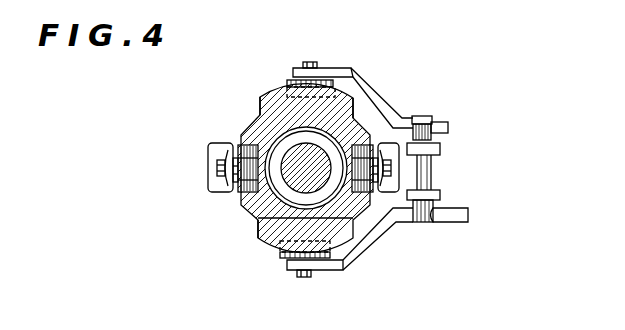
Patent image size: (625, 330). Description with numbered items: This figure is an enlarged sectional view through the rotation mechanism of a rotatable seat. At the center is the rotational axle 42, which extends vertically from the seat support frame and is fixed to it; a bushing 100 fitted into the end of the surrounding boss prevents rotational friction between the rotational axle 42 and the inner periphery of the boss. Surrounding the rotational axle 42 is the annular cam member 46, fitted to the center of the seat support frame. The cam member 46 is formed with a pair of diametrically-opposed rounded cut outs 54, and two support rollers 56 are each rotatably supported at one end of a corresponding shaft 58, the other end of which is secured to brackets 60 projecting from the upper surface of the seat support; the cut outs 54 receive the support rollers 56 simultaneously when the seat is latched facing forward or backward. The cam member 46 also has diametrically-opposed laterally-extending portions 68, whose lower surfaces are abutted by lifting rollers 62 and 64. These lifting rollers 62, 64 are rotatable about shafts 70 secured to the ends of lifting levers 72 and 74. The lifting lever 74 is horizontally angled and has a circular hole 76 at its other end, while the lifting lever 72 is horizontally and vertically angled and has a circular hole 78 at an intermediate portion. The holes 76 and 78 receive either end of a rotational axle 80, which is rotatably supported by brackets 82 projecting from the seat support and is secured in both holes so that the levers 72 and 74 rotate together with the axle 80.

The rotational axle 42 is at (284, 187).
The annular cam member 46 is at (268, 205).
The rounded cut outs 54 is at (246, 144).
The support rollers 56 is at (243, 136).
The shaft 58 is at (235, 158).
The brackets 60 is at (214, 170).
The lifting roller 62 is at (283, 257).
The lifting roller 64 is at (292, 71).
The laterally-extending portions 68 is at (266, 93).
The shafts 70 is at (312, 62).
The lifting lever 72 is at (367, 256).
The lifting lever 74 is at (364, 76).
The circular hole 76 is at (436, 121).
The circular hole 78 is at (443, 206).
The rotational axle 80 is at (430, 172).
The brackets 82 is at (440, 148).
The bushing 100 is at (263, 236).